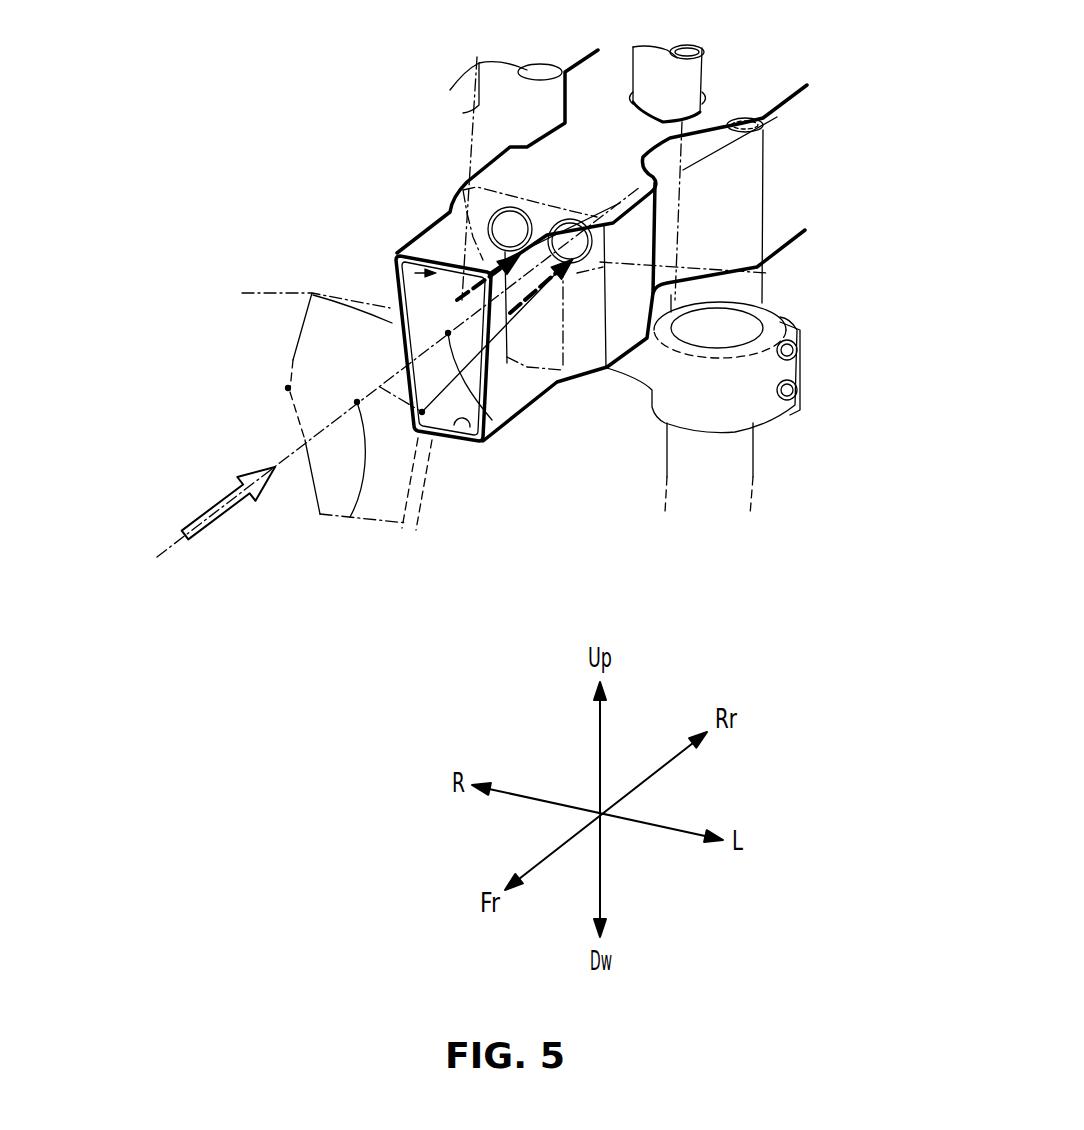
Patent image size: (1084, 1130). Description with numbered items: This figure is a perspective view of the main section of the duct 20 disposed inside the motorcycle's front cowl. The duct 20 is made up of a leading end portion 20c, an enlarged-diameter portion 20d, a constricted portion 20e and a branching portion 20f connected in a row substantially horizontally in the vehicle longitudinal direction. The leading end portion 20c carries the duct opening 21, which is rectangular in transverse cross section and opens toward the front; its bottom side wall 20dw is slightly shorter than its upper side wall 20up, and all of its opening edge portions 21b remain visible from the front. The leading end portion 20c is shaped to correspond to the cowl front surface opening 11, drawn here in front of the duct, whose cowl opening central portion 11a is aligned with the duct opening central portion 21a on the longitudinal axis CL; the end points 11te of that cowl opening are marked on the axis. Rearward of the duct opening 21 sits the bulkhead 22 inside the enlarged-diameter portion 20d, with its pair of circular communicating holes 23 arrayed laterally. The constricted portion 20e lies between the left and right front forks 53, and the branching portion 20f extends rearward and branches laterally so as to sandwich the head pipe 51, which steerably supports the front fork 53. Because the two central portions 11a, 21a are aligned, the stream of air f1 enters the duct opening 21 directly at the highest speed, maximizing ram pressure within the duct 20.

The cowl front surface opening 11 is at (288, 357).
The cowl opening central portion 11a is at (350, 517).
The frame end points 11te is at (287, 388).
The longitudinal axis CL is at (170, 543).
The duct 20 is at (455, 178).
The upper side wall 20up is at (383, 267).
The bottom side wall 20dw is at (470, 443).
The leading end portion 20c is at (597, 265).
The enlarged-diameter portion 20d is at (643, 197).
The constricted portion 20e is at (657, 153).
The branching portion 20f is at (783, 100).
The duct opening 21 is at (397, 253).
The duct opening central portion 21a is at (490, 387).
The opening edge portions 21b is at (417, 247).
The bulkhead 22 is at (566, 272).
The circular communicating holes 23 is at (497, 200).
The head pipe 51 is at (692, 77).
The front fork 53 is at (470, 117).
The stream of air f1 is at (432, 273).